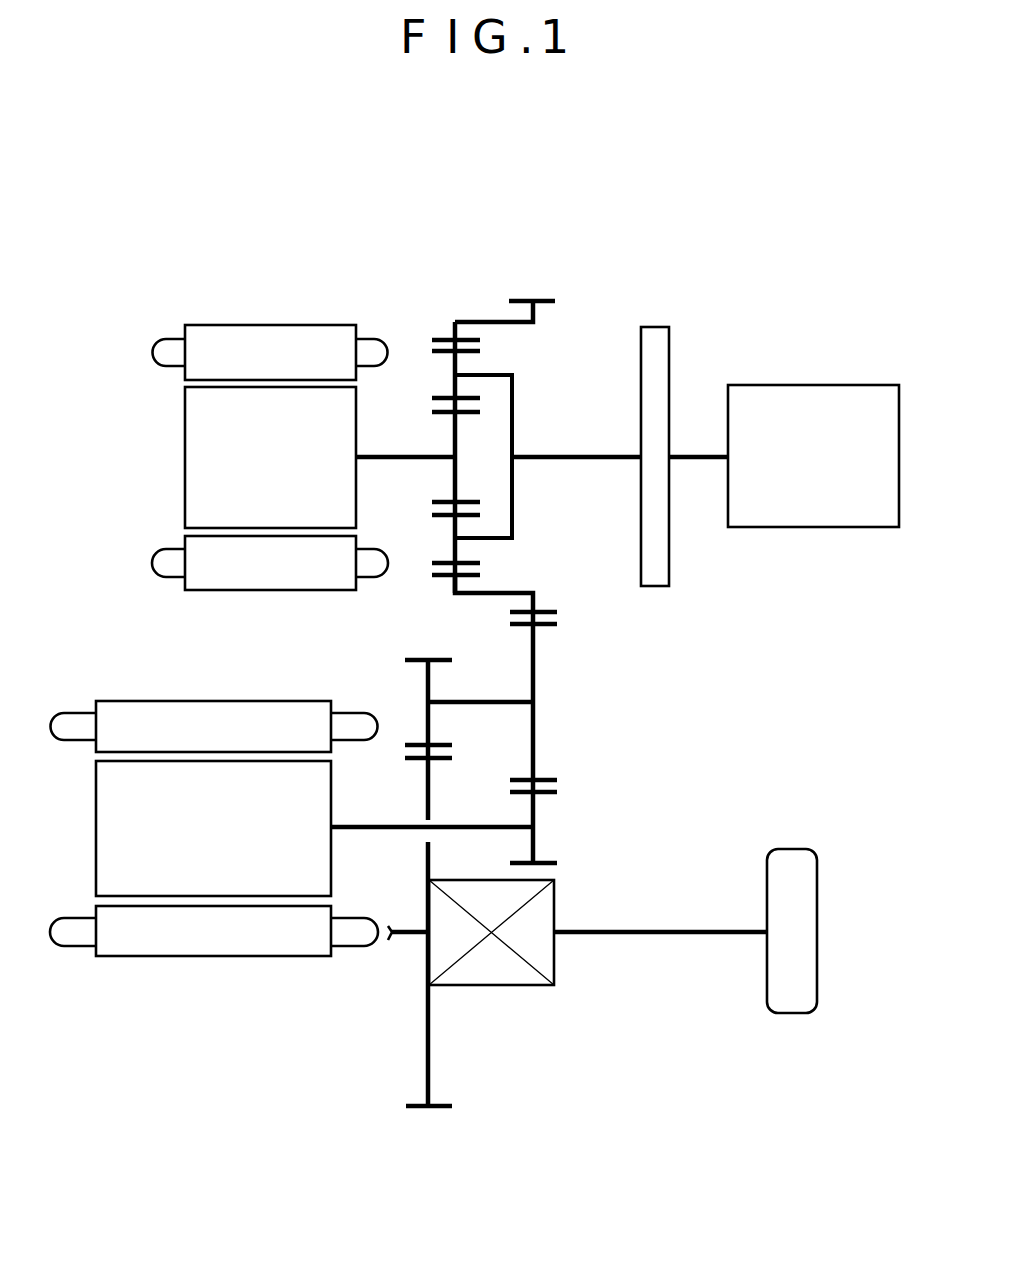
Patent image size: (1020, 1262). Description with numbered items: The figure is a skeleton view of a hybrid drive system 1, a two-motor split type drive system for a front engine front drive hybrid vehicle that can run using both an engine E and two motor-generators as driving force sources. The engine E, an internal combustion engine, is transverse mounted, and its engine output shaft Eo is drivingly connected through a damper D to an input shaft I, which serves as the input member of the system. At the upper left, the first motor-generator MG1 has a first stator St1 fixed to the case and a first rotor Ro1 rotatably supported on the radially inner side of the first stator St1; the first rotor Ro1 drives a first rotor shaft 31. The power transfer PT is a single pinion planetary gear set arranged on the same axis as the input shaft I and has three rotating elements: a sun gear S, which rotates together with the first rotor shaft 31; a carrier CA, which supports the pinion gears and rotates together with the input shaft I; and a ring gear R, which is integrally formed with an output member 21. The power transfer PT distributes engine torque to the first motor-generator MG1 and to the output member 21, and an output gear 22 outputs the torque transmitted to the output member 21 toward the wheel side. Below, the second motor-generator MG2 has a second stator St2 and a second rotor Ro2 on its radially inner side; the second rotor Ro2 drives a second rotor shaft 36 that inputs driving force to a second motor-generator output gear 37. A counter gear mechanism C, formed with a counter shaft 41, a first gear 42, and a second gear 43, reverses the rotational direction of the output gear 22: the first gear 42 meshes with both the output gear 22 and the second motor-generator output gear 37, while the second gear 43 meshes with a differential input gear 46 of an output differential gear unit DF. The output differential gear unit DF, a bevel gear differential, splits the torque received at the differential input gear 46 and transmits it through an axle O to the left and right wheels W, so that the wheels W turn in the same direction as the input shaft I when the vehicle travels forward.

The hybrid drive system 1 is at (245, 208).
The first motor-generator MG1 is at (213, 308).
The first stator St1 is at (270, 457).
The first rotor Ro1 is at (270, 457).
The second motor-generator MG2 is at (187, 690).
The second stator St2 is at (214, 828).
The second rotor Ro2 is at (213, 828).
The power transfer PT is at (443, 308).
The ring gear R is at (465, 333).
The sun gear S is at (442, 415).
The carrier CA is at (512, 412).
The output gear 22 is at (544, 300).
The output member 21 is at (473, 593).
The first rotor shaft 31 is at (412, 460).
The input shaft I is at (573, 460).
The damper D is at (658, 325).
The engine output shaft Eo is at (697, 457).
The engine E is at (802, 385).
The counter gear mechanism C is at (565, 658).
The counter shaft 41 is at (473, 702).
The first gear 42 is at (535, 723).
The second gear 43 is at (428, 683).
The differential input gear 46 is at (428, 783).
The second motor-generator output gear 37 is at (535, 808).
The second rotor shaft 36 is at (400, 827).
The output differential gear unit DF is at (504, 985).
The axle O is at (618, 932).
The wheel W is at (788, 849).